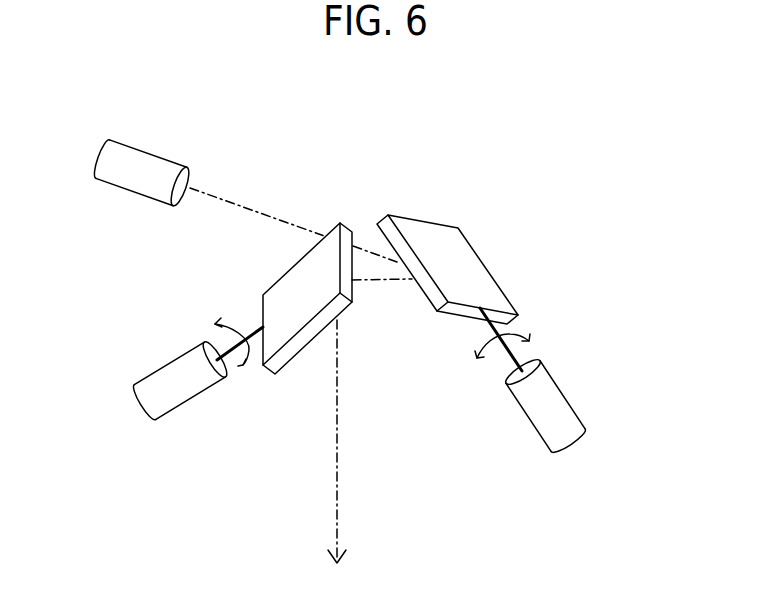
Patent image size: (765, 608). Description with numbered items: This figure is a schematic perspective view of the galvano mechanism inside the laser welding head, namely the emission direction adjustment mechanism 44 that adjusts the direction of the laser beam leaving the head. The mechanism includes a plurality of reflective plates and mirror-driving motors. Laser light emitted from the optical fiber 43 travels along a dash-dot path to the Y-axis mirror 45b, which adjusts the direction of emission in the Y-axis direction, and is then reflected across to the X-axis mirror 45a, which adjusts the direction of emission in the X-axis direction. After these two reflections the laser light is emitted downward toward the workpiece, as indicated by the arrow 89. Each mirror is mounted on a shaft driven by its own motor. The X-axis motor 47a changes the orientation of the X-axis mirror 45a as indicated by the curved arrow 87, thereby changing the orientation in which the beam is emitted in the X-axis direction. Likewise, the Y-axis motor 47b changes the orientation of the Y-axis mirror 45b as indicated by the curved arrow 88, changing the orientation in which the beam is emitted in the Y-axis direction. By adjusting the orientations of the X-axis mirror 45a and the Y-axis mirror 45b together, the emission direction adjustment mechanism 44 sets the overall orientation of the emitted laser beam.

The optical fiber 43 is at (136, 160).
The emission direction adjustment mechanism 44 is at (449, 203).
The X-axis mirror 45a is at (463, 264).
The Y-axis mirror 45b is at (312, 280).
The X-axis motor 47a is at (553, 411).
The Y-axis motor 47b is at (173, 377).
The arrow 87 is at (508, 333).
The arrow 88 is at (237, 331).
The arrow 89 is at (337, 466).